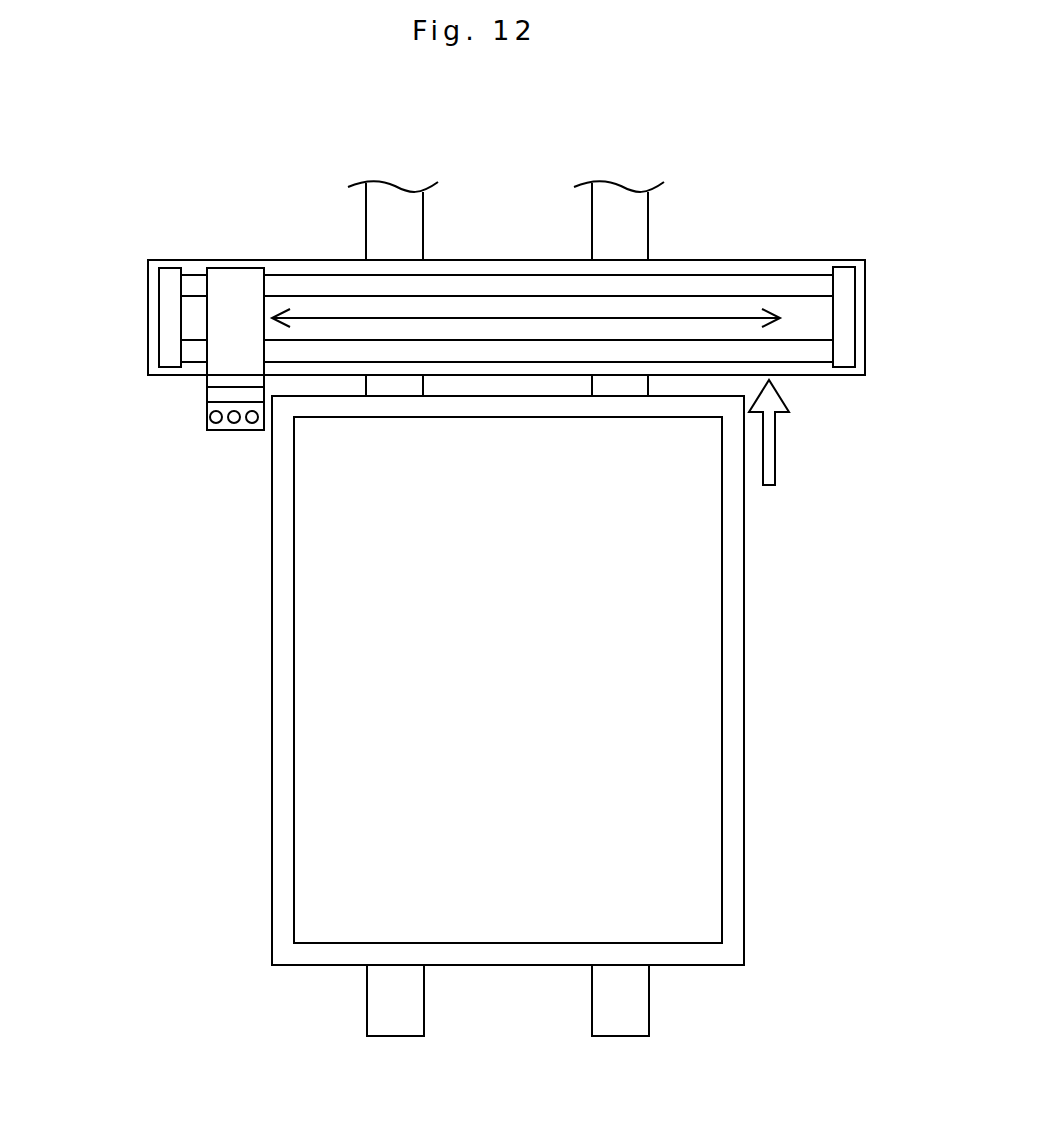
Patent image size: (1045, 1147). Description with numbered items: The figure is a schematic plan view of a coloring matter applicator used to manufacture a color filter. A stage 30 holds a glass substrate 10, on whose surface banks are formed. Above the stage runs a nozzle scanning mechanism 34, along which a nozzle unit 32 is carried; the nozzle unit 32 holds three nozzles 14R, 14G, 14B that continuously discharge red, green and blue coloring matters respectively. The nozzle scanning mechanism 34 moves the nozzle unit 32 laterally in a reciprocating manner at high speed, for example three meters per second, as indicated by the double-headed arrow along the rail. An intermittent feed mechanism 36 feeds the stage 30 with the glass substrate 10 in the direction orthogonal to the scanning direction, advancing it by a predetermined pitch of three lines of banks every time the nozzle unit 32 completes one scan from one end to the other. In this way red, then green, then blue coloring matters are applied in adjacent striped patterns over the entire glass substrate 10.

The glass substrate 10 is at (655, 680).
The stage 30 is at (730, 778).
The nozzle unit 32 is at (202, 392).
The nozzle scanning mechanism 34 is at (682, 248).
The intermittent feed mechanism 36 is at (362, 975).
The nozzle 14R is at (212, 422).
The nozzle 14G is at (233, 424).
The nozzle 14B is at (252, 424).